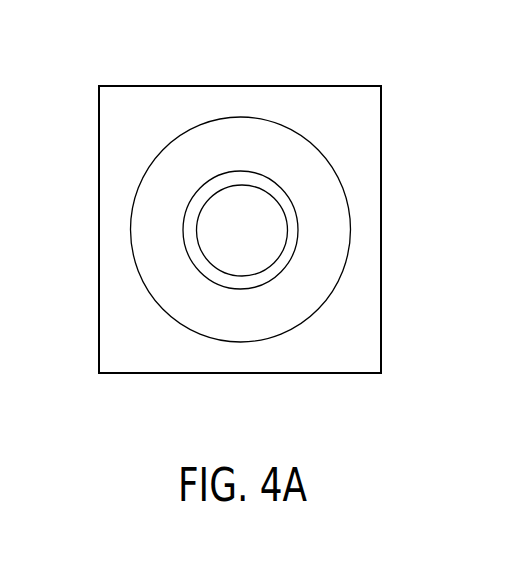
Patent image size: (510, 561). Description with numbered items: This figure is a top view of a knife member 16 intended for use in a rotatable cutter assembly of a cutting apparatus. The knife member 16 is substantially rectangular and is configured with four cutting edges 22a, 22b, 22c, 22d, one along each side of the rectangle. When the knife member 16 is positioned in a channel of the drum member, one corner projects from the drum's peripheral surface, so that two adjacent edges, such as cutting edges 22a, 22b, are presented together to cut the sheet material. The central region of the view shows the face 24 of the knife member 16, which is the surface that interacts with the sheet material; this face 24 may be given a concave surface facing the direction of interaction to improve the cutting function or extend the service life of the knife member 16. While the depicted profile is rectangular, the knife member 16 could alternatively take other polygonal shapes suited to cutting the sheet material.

The knife member 16 is at (322, 100).
The cutting edge 22a is at (240, 86).
The cutting edge 22b is at (381, 228).
The cutting edge 22c is at (242, 373).
The cutting edge 22d is at (99, 233).
The face 24 is at (352, 352).